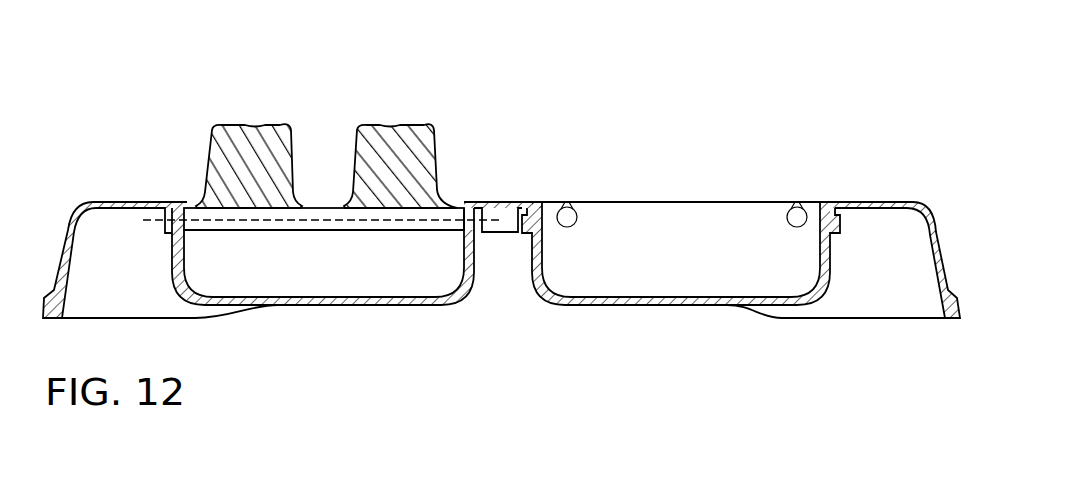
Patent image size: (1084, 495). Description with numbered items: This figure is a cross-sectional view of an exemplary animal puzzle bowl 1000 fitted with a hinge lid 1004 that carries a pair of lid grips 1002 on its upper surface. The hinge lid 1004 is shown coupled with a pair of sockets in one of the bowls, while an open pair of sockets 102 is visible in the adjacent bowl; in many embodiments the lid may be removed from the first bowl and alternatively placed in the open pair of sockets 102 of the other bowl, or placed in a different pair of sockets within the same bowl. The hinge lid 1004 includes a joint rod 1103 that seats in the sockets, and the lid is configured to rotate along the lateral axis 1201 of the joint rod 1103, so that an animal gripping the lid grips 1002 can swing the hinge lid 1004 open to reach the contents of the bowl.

The animal puzzle bowl 1000 is at (501, 174).
The lid grips 1002 is at (372, 126).
The hinge lid 1004 is at (423, 200).
The sockets 102 is at (826, 218).
The joint rod 1103 is at (358, 230).
The lateral axis 1201 is at (455, 203).